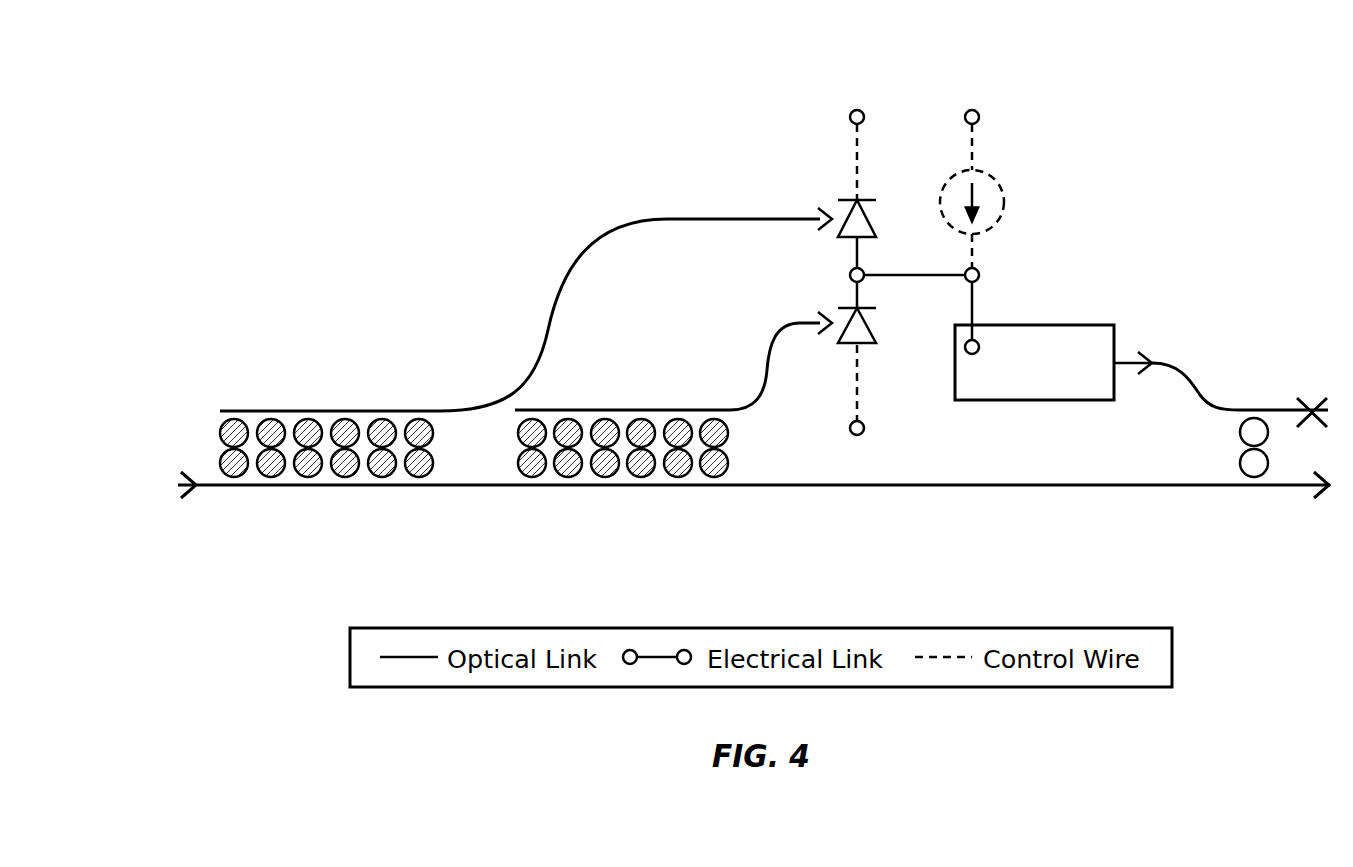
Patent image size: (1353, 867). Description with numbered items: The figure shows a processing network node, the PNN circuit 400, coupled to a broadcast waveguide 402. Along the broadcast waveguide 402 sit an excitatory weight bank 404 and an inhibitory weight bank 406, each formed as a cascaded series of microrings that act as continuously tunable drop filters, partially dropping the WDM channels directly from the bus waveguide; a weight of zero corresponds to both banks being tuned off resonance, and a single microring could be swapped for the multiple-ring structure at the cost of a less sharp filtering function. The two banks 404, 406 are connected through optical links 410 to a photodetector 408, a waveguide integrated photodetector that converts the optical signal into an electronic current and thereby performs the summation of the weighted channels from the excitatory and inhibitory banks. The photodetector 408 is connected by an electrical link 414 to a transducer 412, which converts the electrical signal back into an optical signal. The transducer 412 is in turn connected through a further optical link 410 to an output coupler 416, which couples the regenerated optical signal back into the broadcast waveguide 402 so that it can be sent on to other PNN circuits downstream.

The PNN circuit 400 is at (382, 105).
The broadcast waveguide 402 is at (1136, 481).
The excitatory weight bank 404 is at (272, 592).
The inhibitory weight bank 406 is at (570, 592).
The photodetector 408 is at (790, 273).
The optical link 410 is at (550, 323).
The transducer 412 is at (1041, 251).
The electrical link 414 is at (900, 278).
The output coupler 416 is at (1284, 199).